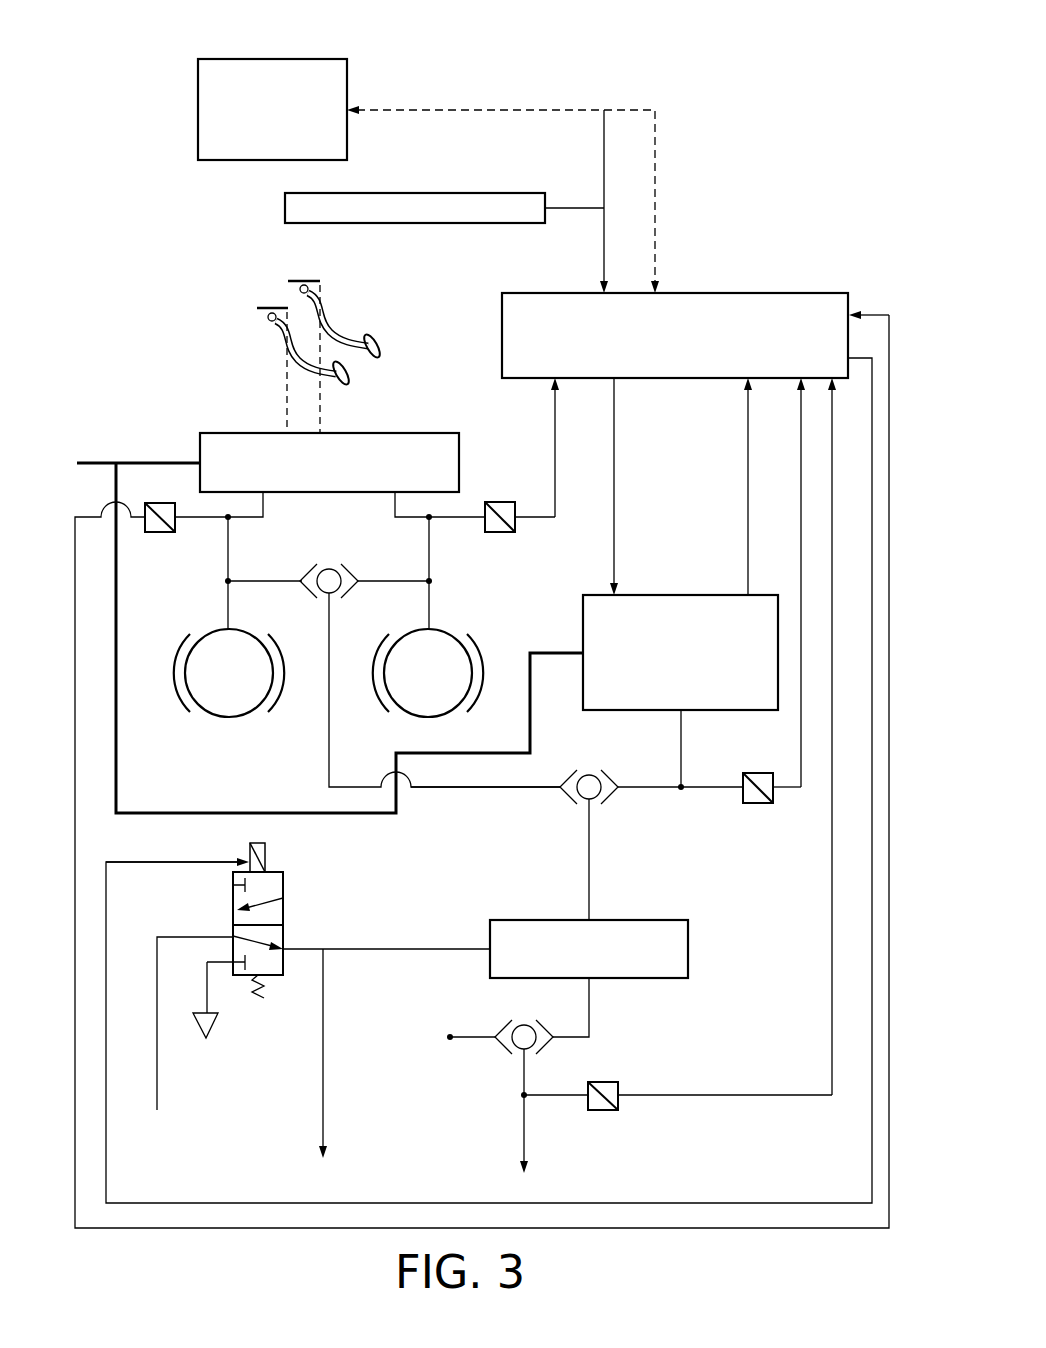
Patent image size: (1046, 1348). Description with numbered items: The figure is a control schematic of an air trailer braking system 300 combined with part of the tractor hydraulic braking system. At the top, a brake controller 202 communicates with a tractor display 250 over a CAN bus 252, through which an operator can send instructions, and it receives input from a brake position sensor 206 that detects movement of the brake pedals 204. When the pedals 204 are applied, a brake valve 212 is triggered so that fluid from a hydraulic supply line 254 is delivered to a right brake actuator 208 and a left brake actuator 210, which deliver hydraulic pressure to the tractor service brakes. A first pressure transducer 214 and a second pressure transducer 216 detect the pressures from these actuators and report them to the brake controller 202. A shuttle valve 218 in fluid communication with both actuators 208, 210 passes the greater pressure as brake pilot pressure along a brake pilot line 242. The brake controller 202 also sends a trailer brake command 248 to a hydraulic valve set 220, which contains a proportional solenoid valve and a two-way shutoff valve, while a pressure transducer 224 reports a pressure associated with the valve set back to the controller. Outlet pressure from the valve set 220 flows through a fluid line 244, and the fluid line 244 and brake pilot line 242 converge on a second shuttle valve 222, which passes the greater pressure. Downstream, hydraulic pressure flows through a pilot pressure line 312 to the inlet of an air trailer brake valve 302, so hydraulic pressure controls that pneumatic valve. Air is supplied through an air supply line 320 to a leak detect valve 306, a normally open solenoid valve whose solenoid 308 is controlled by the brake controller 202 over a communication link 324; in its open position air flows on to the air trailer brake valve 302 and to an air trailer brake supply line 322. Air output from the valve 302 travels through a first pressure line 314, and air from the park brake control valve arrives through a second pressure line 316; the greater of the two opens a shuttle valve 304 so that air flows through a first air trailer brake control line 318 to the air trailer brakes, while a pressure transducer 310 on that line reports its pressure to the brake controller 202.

The air trailer braking system 300 is at (785, 92).
The tractor display 250 is at (229, 58).
The controller area network (CAN) bus 252 is at (398, 108).
The brake position sensor 206 is at (493, 192).
The brake controller 202 is at (738, 292).
The brake pedals 204 is at (287, 281).
The hydraulic supply line 254 is at (93, 461).
The brake valve 212 is at (400, 432).
The first pressure transducer 214 is at (158, 533).
The second pressure transducer 216 is at (498, 501).
The shuttle valve 218 is at (329, 565).
The right brake actuator 208 is at (231, 718).
The left brake actuator 210 is at (447, 636).
The trailer brake command 248 is at (614, 466).
The hydraulic valve set 220 is at (676, 594).
The second shuttle valve 222 is at (581, 770).
The brake pilot line 242 is at (458, 790).
The hydraulic valve set fluid line 244 is at (645, 790).
The pressure transducer 224 is at (759, 805).
The pilot pressure line 312 is at (589, 862).
The communication link 324 is at (178, 861).
The solenoid 308 is at (265, 852).
The leak detect valve 306 is at (312, 901).
The air supply line 320 is at (157, 1078).
The air trailer brake supply line 322 is at (323, 1115).
The air trailer brake valve 302 is at (689, 950).
The shuttle valve 304 is at (524, 1020).
The first pressure line 314 is at (589, 1007).
The second pressure line 316 is at (467, 1040).
The first air trailer brake control line 318 is at (524, 1133).
The pressure transducer 310 is at (602, 1112).